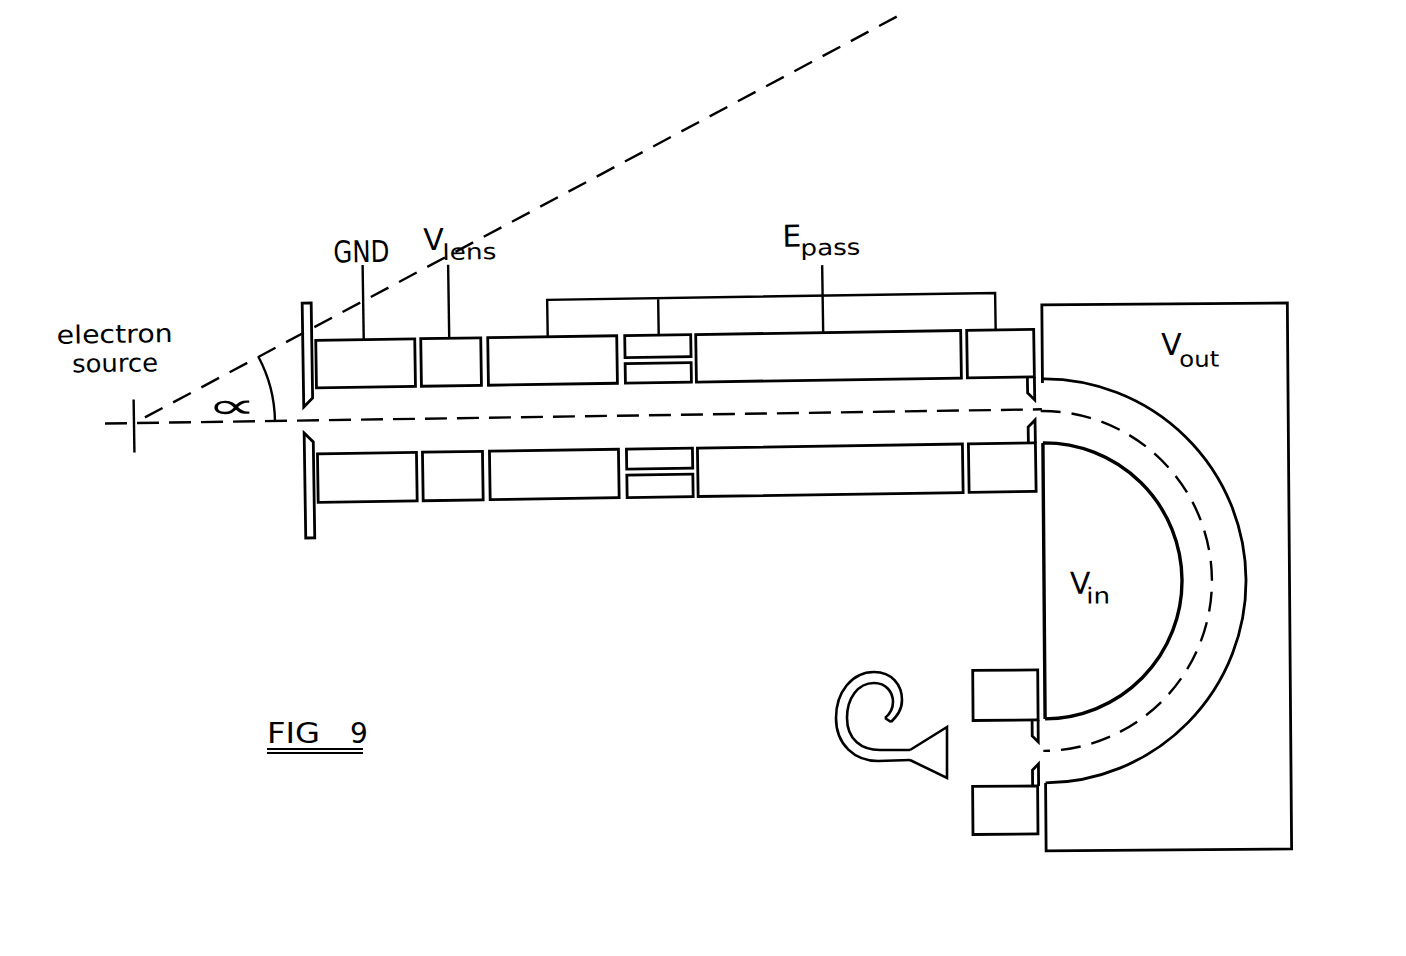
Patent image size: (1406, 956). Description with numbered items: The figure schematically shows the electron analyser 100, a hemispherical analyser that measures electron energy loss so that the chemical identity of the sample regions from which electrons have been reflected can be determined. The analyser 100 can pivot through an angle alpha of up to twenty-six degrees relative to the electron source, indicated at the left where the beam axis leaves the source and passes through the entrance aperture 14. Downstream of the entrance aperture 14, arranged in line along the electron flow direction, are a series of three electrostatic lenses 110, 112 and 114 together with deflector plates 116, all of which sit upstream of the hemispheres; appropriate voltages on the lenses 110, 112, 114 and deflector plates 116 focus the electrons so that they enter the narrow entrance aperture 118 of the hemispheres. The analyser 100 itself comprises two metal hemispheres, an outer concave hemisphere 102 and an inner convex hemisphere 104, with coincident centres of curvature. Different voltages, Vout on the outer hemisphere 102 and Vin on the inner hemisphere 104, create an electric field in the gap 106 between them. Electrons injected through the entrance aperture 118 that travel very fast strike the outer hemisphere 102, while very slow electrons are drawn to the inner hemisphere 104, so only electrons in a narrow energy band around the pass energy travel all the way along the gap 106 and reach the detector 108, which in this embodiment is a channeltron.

The entrance aperture 14 is at (304, 464).
The electron analyser 100 is at (1032, 236).
The outer hemisphere 102 is at (1238, 527).
The inner hemisphere 104 is at (1178, 612).
The gap 106 is at (1208, 485).
The detector 108 is at (935, 757).
The electrostatic lens 110 is at (368, 487).
The electrostatic lens 112 is at (450, 486).
The electrostatic lens 114 is at (570, 488).
The deflector plates 116 is at (661, 480).
The entrance aperture 118 is at (1035, 410).